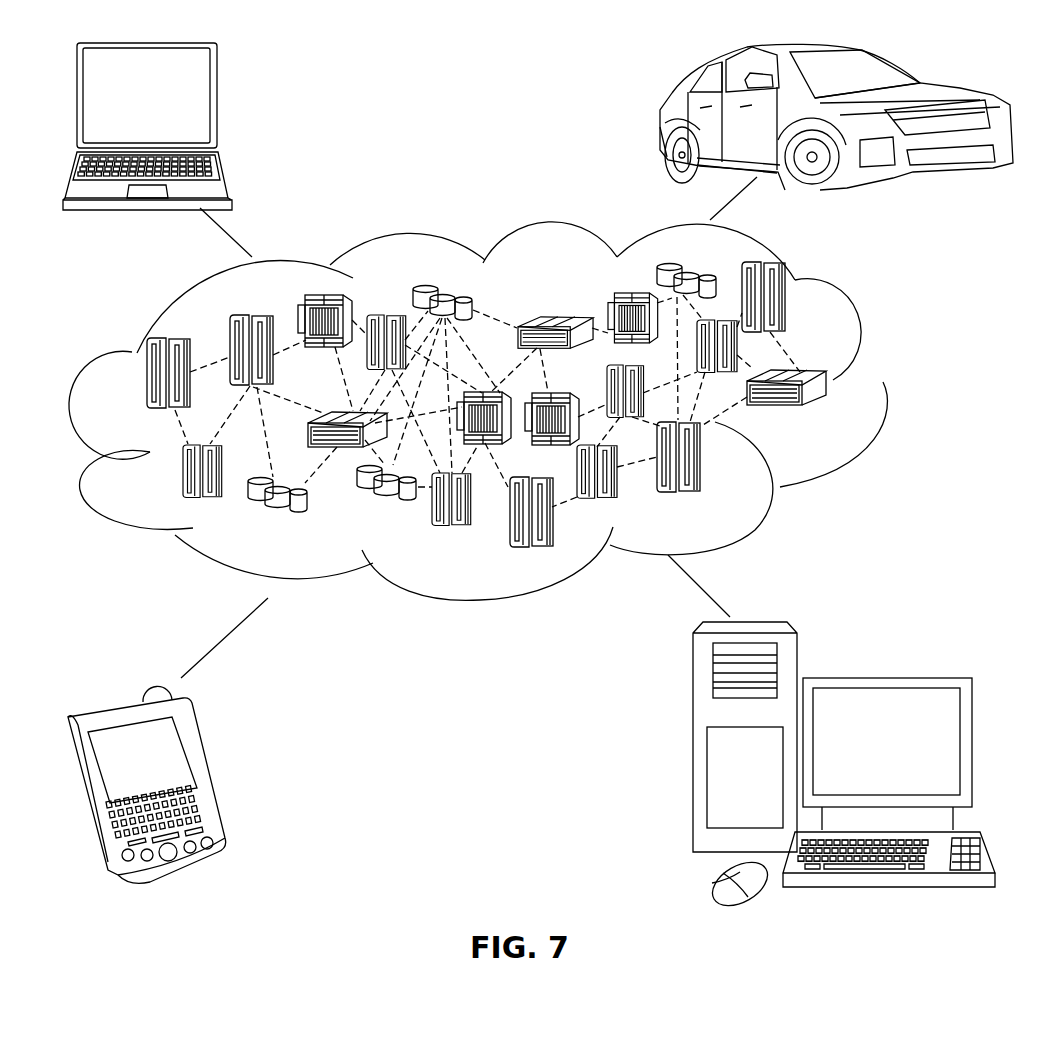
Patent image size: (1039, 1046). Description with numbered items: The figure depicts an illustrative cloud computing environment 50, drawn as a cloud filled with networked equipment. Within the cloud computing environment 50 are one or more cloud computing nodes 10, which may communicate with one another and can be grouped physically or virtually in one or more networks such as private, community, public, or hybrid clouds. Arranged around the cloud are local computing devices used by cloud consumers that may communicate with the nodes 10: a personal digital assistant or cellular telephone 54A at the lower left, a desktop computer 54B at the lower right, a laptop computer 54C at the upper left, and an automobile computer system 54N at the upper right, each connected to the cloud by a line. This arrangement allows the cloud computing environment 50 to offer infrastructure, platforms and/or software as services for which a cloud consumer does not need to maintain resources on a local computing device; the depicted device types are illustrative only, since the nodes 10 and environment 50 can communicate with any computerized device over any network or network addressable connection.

The cloud computing node 10 is at (826, 415).
The cloud computing environment 50 is at (885, 387).
The personal digital assistant (PDA) or cellular telephone 54A is at (207, 770).
The desktop computer 54B is at (883, 677).
The laptop computer 54C is at (217, 107).
The automobile computer system 54N is at (660, 122).